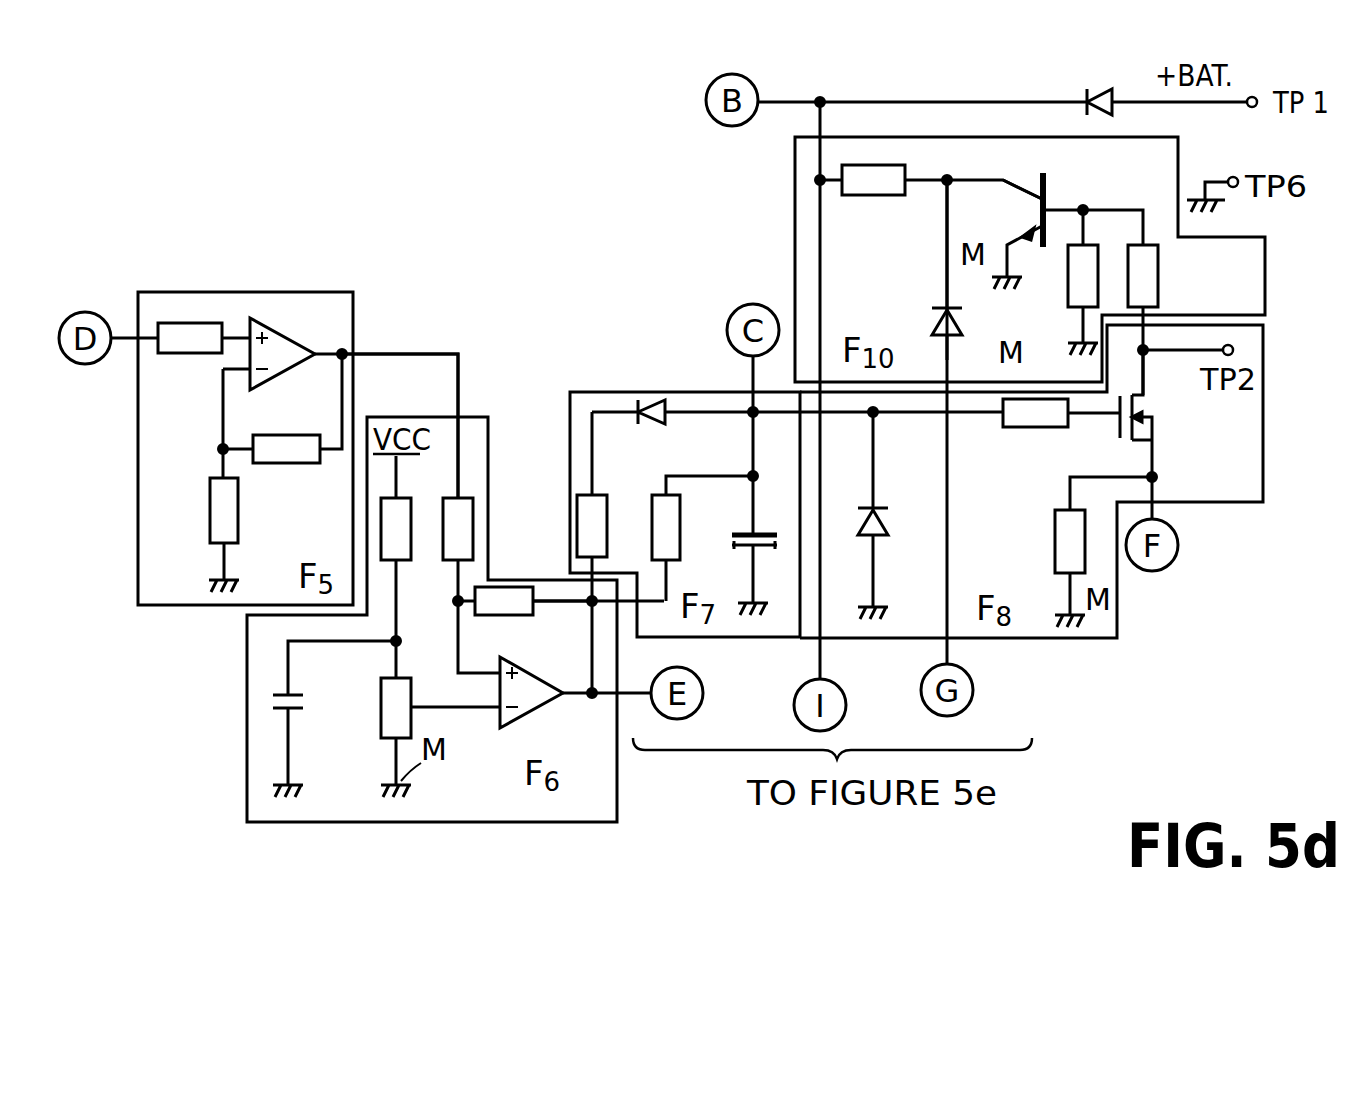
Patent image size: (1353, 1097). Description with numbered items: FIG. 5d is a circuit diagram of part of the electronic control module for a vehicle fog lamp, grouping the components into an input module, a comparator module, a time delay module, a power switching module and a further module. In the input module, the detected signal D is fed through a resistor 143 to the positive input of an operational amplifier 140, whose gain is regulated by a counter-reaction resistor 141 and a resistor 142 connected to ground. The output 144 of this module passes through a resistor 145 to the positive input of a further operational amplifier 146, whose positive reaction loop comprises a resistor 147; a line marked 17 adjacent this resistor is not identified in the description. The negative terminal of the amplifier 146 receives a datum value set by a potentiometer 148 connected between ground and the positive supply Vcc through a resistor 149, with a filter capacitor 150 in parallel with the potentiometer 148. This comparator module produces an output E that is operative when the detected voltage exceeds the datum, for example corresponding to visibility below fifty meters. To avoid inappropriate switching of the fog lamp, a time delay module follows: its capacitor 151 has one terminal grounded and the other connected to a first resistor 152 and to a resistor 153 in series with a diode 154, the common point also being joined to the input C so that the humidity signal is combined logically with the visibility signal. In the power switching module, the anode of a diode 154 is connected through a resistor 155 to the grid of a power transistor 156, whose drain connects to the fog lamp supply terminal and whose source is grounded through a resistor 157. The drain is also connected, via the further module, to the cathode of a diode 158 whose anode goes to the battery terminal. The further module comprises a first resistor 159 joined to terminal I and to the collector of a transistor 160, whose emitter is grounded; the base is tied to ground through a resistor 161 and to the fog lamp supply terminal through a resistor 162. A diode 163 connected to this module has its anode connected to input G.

The output line 17 is at (561, 624).
The operational amplifier 140 is at (282, 338).
The counter-reaction resistor 141 is at (297, 436).
The resistor 142 is at (234, 527).
The resistor 143 is at (200, 355).
The output 144 is at (388, 354).
The resistor 145 is at (466, 514).
The operational amplifier 146 is at (540, 690).
The resistor 147 is at (506, 588).
The potentiometer 148 is at (381, 702).
The resistor 149 is at (436, 492).
The filter capacitor 150 is at (300, 710).
The capacitor 151 is at (758, 530).
The first resistor 152 is at (676, 506).
The resistor 153 is at (610, 506).
The diode 154 is at (641, 408).
The resistor 155 is at (1060, 426).
The power transistor 156 is at (1156, 449).
The resistor 157 is at (1056, 542).
The diode 158 is at (1108, 90).
The first resistor 159 is at (891, 188).
The transistor 160 is at (1035, 218).
The resistor 161 is at (1067, 270).
The resistor 162 is at (1150, 270).
The diode 163 is at (943, 307).